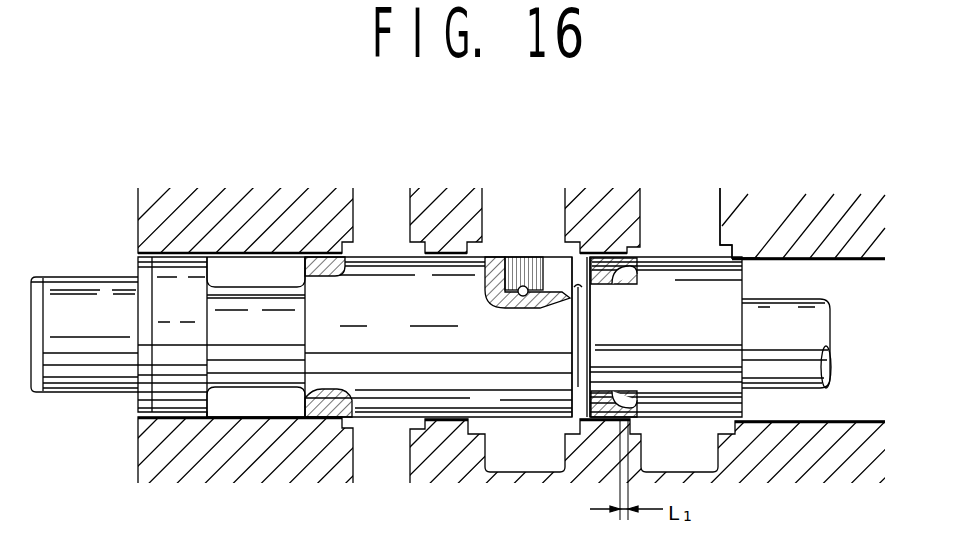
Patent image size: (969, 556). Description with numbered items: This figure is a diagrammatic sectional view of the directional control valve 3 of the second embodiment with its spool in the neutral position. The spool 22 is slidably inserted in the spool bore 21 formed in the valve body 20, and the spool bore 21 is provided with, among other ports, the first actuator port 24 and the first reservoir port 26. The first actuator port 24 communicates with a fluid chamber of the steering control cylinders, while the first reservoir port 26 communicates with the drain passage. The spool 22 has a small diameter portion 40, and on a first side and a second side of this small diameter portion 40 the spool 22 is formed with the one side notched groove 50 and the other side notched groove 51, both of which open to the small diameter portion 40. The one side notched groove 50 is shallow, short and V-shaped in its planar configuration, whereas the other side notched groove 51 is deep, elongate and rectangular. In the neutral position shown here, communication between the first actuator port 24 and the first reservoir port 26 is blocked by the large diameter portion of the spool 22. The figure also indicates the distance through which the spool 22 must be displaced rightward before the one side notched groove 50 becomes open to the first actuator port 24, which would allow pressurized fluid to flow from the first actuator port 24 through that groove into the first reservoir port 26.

The directional control valve 3 is at (806, 196).
The valve body 20 is at (593, 208).
The spool bore 21 is at (787, 418).
The spool 22 is at (393, 418).
The first actuator port 24 is at (706, 207).
The first reservoir port 26 is at (483, 206).
The small diameter portion 40 is at (592, 305).
The one side notched groove 50 is at (620, 287).
The other side notched groove 51 is at (533, 304).